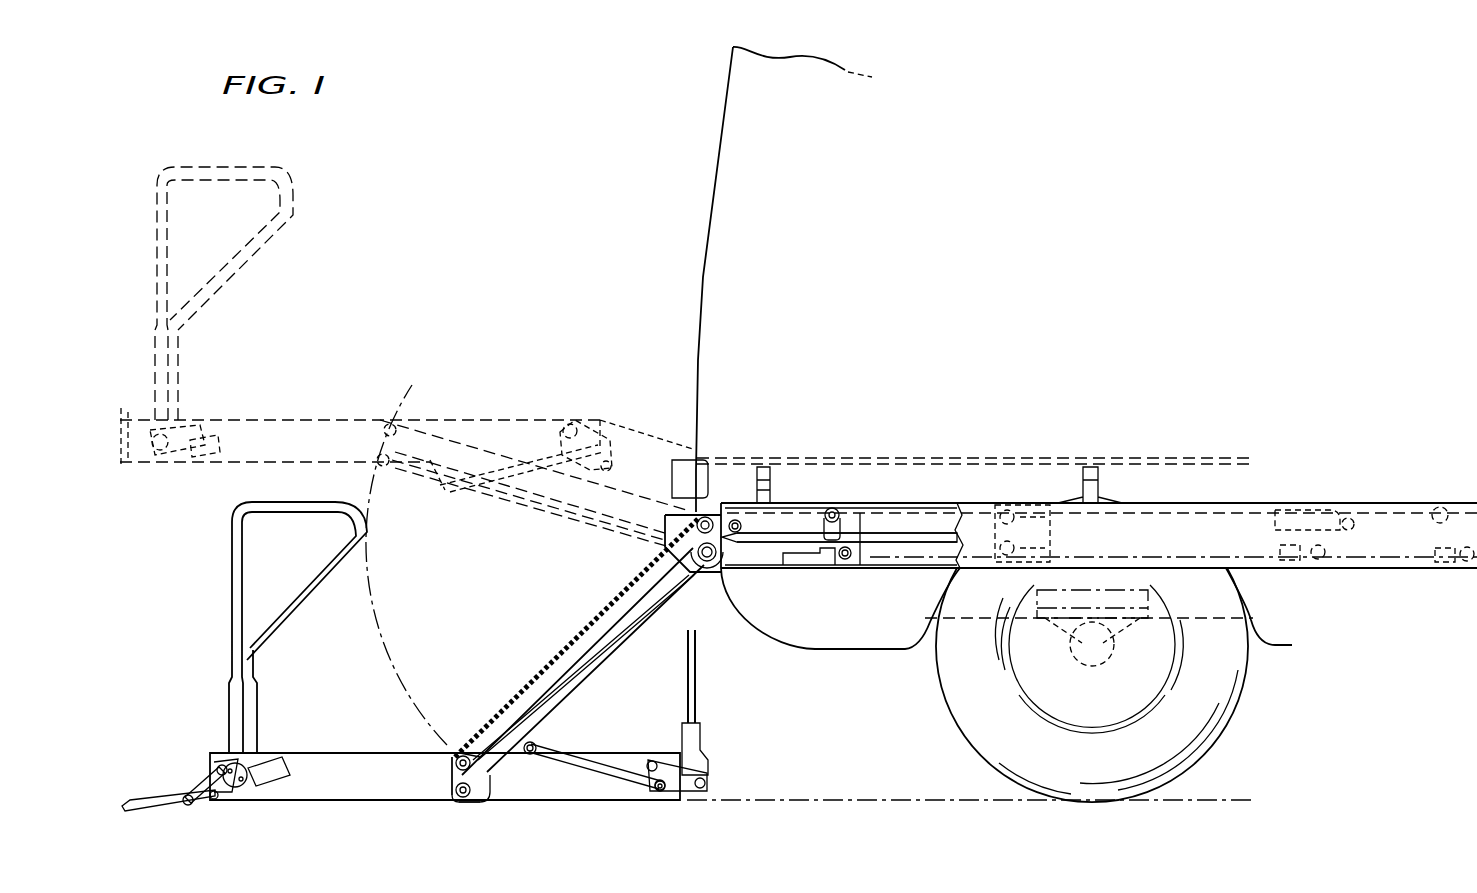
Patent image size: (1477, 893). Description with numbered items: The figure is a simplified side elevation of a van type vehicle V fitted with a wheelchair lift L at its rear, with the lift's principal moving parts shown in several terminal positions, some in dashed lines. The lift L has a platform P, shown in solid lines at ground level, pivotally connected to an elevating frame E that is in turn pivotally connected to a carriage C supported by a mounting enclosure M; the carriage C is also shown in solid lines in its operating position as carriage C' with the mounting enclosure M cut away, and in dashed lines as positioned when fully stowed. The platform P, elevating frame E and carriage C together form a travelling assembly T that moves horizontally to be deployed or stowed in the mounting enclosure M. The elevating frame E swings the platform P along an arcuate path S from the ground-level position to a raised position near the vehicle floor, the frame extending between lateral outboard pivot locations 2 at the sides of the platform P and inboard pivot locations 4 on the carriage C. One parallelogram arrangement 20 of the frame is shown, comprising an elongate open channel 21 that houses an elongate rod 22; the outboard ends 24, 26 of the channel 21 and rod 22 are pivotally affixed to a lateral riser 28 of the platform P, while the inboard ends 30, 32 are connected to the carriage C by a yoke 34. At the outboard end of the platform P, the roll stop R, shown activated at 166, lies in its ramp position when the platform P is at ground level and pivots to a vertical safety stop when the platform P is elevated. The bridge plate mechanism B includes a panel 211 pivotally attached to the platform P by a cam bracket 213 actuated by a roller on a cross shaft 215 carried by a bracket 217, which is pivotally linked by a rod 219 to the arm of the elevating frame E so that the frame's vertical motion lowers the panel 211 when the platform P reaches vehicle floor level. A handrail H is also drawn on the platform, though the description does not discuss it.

The vehicle V is at (697, 279).
The carriage C is at (1099, 540).
The carriage in operating position C' is at (847, 575).
The mounting enclosure M is at (1020, 505).
The arcuate path S is at (386, 668).
The lift L is at (432, 410).
The bridge plate mechanism B is at (624, 432).
The yoke 34 is at (687, 487).
The platform P is at (296, 416).
The handrail H is at (232, 608).
The lateral outboard pivot locations 2 is at (432, 798).
The lateral riser 28 is at (348, 755).
The roll stop activation location 166 is at (172, 797).
The roll stop R is at (196, 784).
The parallelogram arrangement 20 is at (594, 604).
The elongate open channel 21 is at (578, 643).
The elongate rod 22 is at (572, 692).
The elevating frame E is at (525, 678).
The travelling assembly T is at (578, 576).
The outboard end of channel 24 is at (458, 750).
The outboard end of rod 26 is at (464, 816).
The inboard pivot locations 4 is at (662, 547).
The inboard end of channel 30 is at (665, 518).
The inboard end of rod 32 is at (706, 570).
The rod 219 is at (600, 775).
The panel 211 is at (698, 690).
The cam bracket 213 is at (708, 763).
The cross shaft 215 is at (710, 780).
The bracket 217 is at (690, 794).